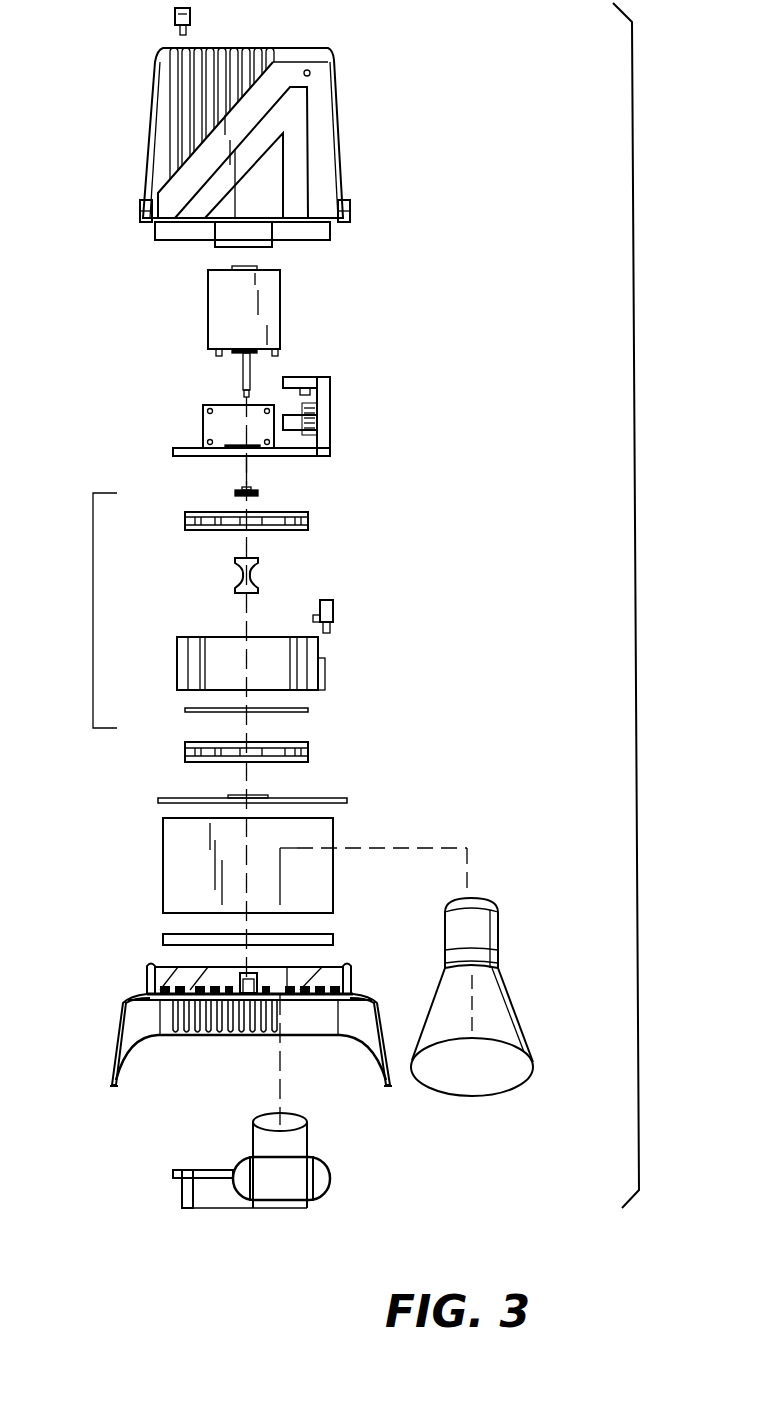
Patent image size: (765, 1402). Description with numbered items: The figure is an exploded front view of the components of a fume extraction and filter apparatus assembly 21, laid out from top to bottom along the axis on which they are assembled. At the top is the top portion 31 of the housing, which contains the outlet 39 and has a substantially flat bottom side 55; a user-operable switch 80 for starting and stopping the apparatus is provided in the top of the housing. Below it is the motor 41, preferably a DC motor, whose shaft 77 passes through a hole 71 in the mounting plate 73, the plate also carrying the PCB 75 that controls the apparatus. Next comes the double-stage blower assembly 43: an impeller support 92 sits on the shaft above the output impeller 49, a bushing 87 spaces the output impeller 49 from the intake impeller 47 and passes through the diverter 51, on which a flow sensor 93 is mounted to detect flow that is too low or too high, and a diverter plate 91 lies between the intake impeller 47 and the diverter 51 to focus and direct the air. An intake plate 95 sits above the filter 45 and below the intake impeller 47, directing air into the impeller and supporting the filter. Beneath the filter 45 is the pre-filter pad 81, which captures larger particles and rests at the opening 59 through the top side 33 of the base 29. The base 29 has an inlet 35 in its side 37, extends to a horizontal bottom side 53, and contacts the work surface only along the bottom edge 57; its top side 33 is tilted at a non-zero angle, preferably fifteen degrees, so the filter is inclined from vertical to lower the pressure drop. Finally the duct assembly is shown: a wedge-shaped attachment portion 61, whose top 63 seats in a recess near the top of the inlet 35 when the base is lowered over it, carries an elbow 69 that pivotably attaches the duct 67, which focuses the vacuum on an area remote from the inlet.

The fume extraction and filter apparatus assembly 21 is at (640, 607).
The base 29 is at (112, 1019).
The top portion 31 is at (352, 212).
The top side 33 is at (145, 968).
The inlet 35 is at (252, 1081).
The side 37 is at (116, 1042).
The outlet 39 is at (232, 47).
The motor 41 is at (208, 300).
The blower assembly 43 is at (93, 622).
The filter 45 is at (333, 825).
The intake impeller 47 is at (312, 752).
The output impeller 49 is at (185, 520).
The diverter 51 is at (230, 670).
The bottom side 53 is at (118, 1098).
The bottom side 55 is at (340, 225).
The bottom edge 57 is at (112, 1085).
The opening 59 is at (303, 985).
The attachment portion 61 is at (182, 1190).
The top 63 is at (210, 1170).
The duct 67 is at (498, 935).
The elbow 69 is at (325, 1172).
The hole 71 is at (240, 458).
The mounting plate 73 is at (330, 430).
The PCB 75 is at (317, 380).
The shaft 77 is at (240, 380).
The user-operable switch 80 is at (172, 15).
The pre-filter pad 81 is at (160, 940).
The bushing 87 is at (235, 575).
The diverter plate 91 is at (215, 712).
The impeller support 92 is at (235, 492).
The flow sensor 93 is at (333, 612).
The intake plate 95 is at (160, 800).